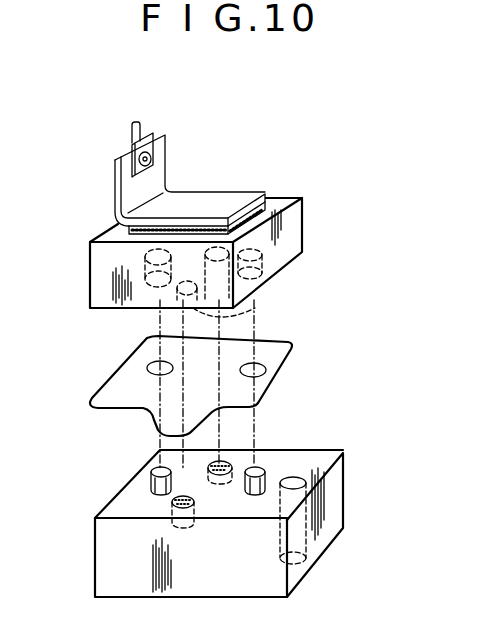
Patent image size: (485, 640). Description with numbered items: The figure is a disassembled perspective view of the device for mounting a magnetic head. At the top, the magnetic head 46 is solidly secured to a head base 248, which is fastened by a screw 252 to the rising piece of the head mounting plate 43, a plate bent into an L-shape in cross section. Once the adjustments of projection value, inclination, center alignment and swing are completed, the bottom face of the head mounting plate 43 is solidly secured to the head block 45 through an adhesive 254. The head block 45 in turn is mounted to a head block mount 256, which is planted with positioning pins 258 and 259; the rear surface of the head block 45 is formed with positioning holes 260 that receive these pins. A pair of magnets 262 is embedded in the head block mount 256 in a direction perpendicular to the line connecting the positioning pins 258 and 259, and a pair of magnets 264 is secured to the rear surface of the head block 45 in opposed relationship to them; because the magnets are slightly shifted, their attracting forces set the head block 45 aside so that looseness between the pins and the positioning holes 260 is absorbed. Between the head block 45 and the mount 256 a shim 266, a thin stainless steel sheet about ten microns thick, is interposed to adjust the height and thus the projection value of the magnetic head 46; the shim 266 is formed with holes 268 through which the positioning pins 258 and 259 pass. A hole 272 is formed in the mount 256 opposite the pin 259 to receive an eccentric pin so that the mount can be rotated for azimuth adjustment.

The head mounting plate 43 is at (196, 200).
The head block 45 is at (296, 220).
The magnetic head 46 is at (133, 127).
The head base 248 is at (150, 137).
The screw 252 is at (140, 164).
The adhesive 254 is at (266, 214).
The head block mount 256 is at (333, 497).
The positioning pin 258 is at (264, 468).
The positioning pin 259 is at (152, 480).
The positioning holes 260 is at (145, 262).
The magnets 262 is at (194, 503).
The magnets 264 is at (262, 312).
The shim 266 is at (110, 386).
The holes 268 is at (150, 365).
The hole 272 is at (303, 482).